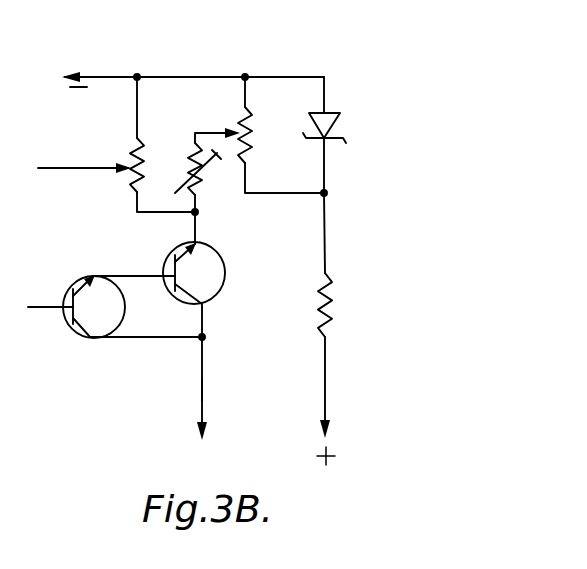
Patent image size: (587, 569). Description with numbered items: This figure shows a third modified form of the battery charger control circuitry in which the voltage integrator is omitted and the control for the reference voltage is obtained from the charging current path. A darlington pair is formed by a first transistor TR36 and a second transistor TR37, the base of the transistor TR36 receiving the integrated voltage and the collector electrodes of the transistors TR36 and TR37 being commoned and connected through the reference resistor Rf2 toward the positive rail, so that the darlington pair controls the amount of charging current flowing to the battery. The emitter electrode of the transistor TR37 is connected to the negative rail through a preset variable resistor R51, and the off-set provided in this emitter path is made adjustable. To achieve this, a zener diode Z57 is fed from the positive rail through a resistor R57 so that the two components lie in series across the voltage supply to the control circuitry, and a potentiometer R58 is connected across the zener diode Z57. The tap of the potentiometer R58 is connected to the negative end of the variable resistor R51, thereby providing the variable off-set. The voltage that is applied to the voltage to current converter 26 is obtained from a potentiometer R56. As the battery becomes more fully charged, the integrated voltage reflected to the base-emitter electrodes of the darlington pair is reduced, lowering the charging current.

The potentiometer R56 is at (134, 166).
The voltage to current converter 26 is at (62, 169).
The potentiometer R58 is at (250, 135).
The preset variable resistor R51 is at (203, 176).
The zener diode Z57 is at (330, 113).
The resistor R57 is at (318, 328).
The transistor TR37 is at (213, 287).
The transistor TR36 is at (84, 333).
The reference resistor Rf2 is at (199, 390).